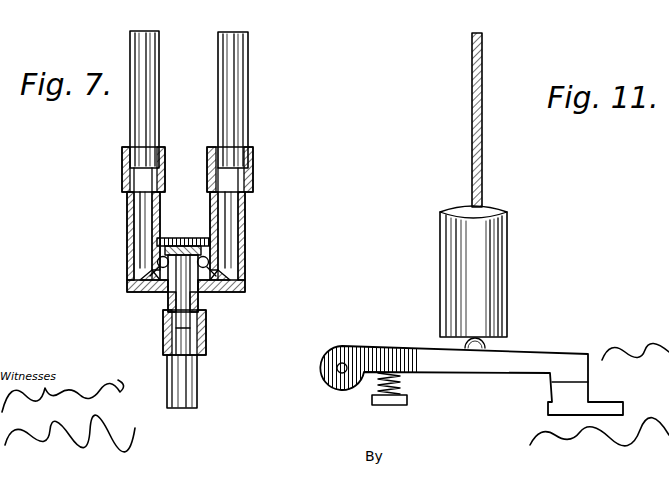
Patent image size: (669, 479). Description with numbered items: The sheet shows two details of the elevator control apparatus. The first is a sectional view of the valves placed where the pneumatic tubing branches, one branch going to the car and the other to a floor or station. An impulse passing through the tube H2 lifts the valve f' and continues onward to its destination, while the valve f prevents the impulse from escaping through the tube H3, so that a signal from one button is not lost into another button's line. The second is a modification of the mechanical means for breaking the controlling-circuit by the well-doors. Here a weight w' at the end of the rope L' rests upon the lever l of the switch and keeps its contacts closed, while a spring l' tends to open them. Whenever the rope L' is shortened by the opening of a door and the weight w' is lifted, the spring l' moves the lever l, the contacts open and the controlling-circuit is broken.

In FIG. 7, the tube H2 is at (159, 111).
In FIG. 7, the tube H3 is at (248, 111).
In FIG. 7, the valve f is at (183, 238).
In FIG. 7, the valve f' is at (183, 241).
In FIG. 11, the rope L' is at (490, 120).
In FIG. 11, the weight w' is at (456, 277).
In FIG. 11, the lever l is at (471, 368).
In FIG. 11, the spring l' is at (402, 389).